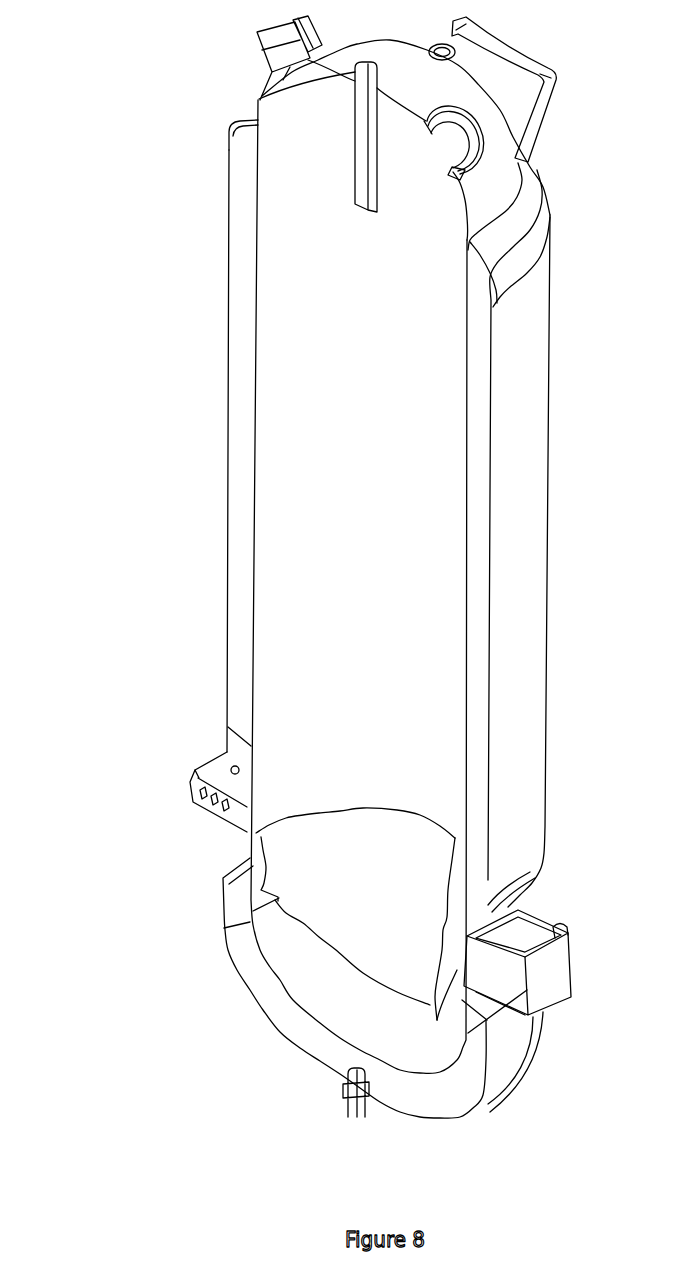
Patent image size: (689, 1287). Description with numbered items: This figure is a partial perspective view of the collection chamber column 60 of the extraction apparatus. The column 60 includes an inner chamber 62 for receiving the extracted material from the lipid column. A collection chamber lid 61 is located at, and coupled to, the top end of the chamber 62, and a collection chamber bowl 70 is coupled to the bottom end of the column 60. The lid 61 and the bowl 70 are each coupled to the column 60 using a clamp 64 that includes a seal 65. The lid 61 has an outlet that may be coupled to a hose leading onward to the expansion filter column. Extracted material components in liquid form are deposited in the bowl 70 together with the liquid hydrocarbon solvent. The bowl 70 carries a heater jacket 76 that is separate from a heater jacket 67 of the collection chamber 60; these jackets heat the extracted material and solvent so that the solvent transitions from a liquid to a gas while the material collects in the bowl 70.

The collection chamber column 60 is at (108, 379).
The collection chamber lid 61 is at (500, 177).
The inner chamber 62 is at (262, 388).
The clamp 64 is at (520, 897).
The seal 65 is at (431, 1007).
The heater jacket 67 is at (480, 505).
The collection chamber bowl 70 is at (310, 823).
The heater jacket 76 is at (486, 1075).